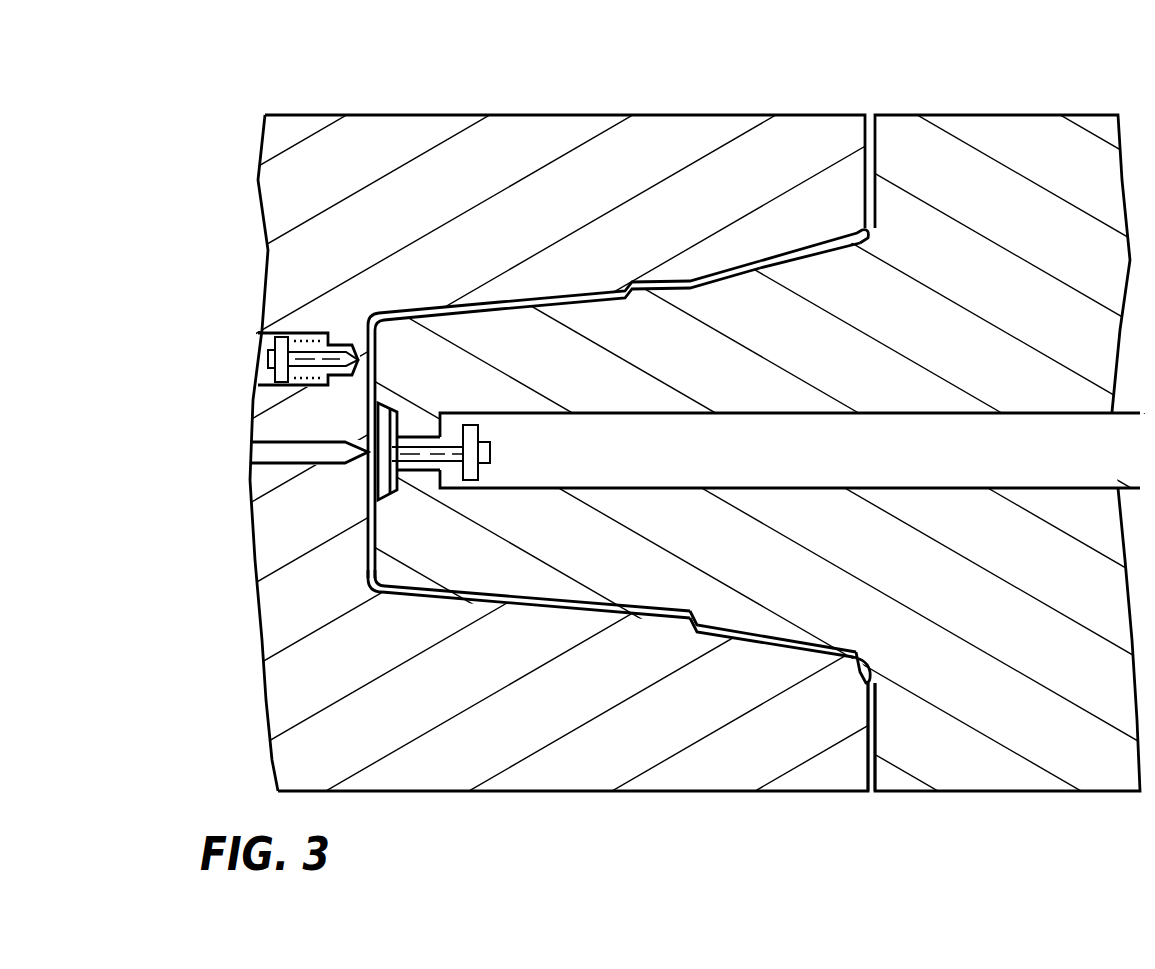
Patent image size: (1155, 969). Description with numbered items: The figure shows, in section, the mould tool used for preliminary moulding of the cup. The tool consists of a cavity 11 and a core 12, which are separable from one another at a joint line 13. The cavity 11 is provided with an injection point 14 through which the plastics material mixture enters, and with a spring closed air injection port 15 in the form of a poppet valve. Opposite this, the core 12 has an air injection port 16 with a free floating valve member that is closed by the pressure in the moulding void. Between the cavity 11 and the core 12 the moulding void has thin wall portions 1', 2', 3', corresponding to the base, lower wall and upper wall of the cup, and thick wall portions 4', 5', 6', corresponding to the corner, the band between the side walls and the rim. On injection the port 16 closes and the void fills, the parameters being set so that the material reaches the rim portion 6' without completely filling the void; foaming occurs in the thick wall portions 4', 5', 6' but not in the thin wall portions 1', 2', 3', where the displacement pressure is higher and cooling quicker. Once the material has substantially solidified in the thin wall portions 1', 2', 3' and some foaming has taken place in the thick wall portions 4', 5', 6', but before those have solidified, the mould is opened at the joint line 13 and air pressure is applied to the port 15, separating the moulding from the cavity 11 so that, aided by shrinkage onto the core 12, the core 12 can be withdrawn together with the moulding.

The thin wall portion of the mould corresponding to the base 1' is at (663, 445).
The thin wall portion of the mould corresponding to the lower wall 2' is at (536, 721).
The thin wall portion of the mould corresponding to the upper wall 3' is at (780, 734).
The thick wall portion of the mould corresponding to the corner 4' is at (395, 315).
The thick wall portion of the mould corresponding to the band 5' is at (630, 180).
The thick wall portion of the mould corresponding to the rim 6' is at (814, 160).
The cavity 11 is at (637, 745).
The core 12 is at (980, 720).
The joint line 13 is at (868, 755).
The injection point 14 is at (342, 455).
The spring closed air injection port 15 is at (358, 338).
The air injection port 16 is at (367, 580).